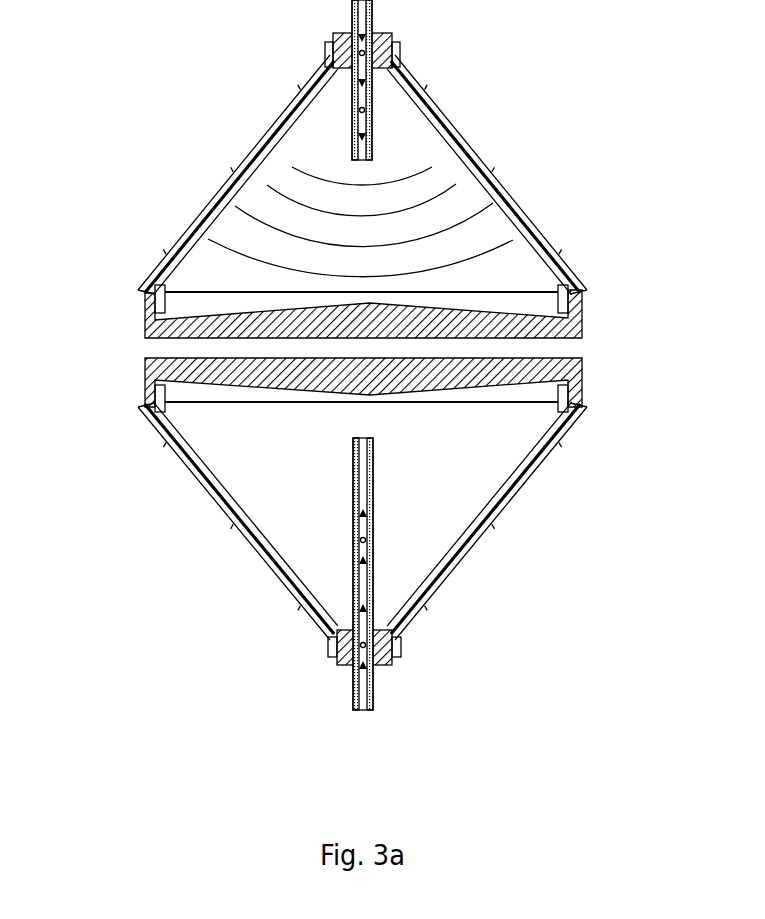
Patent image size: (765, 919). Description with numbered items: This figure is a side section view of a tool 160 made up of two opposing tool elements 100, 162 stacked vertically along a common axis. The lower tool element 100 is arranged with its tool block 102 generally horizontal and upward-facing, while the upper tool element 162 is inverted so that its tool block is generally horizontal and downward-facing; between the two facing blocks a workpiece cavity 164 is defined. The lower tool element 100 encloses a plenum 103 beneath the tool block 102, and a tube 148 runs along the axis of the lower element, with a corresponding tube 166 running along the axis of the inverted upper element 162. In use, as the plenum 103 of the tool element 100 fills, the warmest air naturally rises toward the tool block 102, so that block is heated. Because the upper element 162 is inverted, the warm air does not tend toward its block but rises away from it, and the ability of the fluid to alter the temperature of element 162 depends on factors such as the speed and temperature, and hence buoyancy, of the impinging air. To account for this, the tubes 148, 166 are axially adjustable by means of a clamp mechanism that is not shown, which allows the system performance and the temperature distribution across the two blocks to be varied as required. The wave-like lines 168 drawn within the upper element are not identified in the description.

The tool 160 is at (143, 50).
The tool element 162 is at (545, 38).
The workpiece cavity 164 is at (160, 345).
The tube 166 is at (372, 109).
The acoustic waves 168 is at (450, 186).
The tool block 102 is at (145, 377).
The plenum 103 is at (306, 495).
The tube 148 is at (368, 571).
The tool element 100 is at (562, 565).